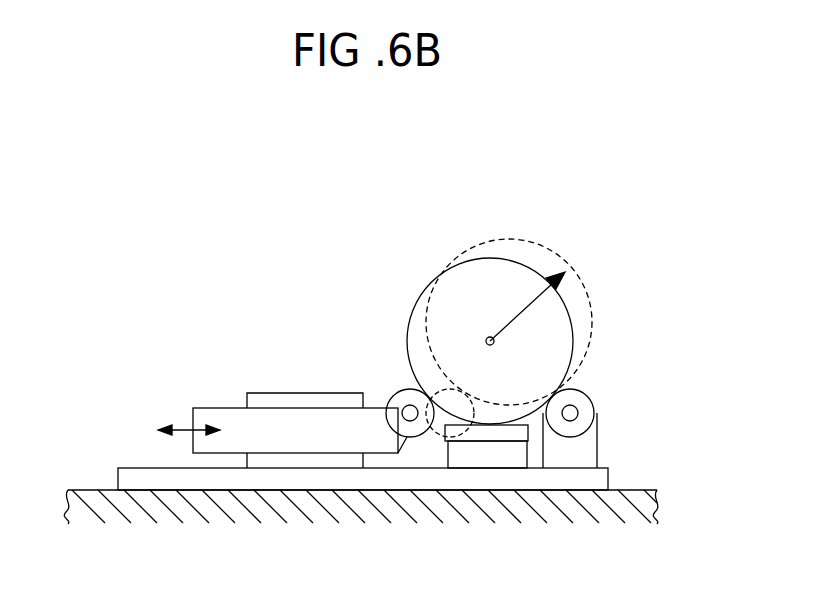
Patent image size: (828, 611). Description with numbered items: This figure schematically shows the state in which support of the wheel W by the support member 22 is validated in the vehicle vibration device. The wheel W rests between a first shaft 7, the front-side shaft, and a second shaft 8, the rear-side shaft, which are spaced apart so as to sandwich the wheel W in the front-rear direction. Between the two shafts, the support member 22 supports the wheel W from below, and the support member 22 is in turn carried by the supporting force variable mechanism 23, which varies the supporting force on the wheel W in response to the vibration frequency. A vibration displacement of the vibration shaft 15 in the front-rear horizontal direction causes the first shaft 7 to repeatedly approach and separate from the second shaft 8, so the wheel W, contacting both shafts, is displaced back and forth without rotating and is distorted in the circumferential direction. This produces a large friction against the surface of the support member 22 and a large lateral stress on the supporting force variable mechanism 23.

The wheel W is at (513, 273).
The first shaft 7 is at (405, 392).
The second shaft 8 is at (585, 398).
The vibration shaft 15 is at (342, 418).
The support member 22 is at (532, 432).
The supporting force variable mechanism 23 is at (487, 458).